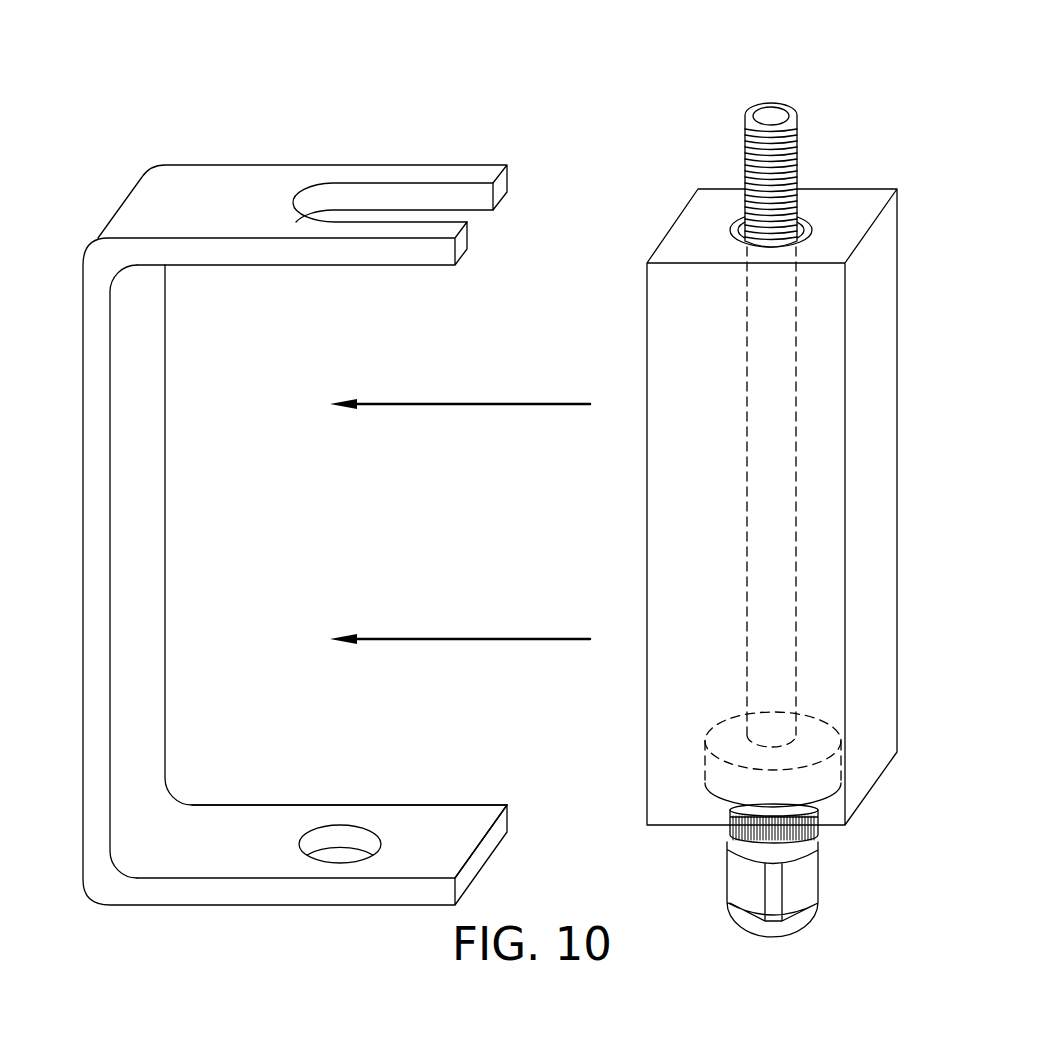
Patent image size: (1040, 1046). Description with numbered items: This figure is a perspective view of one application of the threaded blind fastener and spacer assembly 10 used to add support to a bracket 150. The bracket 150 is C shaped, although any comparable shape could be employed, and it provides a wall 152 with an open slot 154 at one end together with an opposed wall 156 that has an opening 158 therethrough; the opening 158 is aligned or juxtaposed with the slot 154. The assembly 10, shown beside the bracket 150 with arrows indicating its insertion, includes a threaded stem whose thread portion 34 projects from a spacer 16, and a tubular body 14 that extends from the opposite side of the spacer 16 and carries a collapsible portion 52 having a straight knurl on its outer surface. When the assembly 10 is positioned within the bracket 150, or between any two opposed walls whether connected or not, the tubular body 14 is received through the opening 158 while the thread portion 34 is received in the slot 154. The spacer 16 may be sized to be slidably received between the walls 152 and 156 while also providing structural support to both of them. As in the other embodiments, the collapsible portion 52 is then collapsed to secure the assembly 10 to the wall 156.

The threaded blind fastener and spacer assembly 10 is at (894, 81).
The tubular body 14 is at (800, 897).
The spacer 16 is at (633, 529).
The thread portion 34 is at (797, 162).
The collapsible portion 52 is at (817, 833).
The bracket 150 is at (460, 121).
The wall 152 is at (232, 253).
The open slot 154 is at (494, 231).
The wall 156 is at (268, 827).
The opening 158 is at (353, 824).